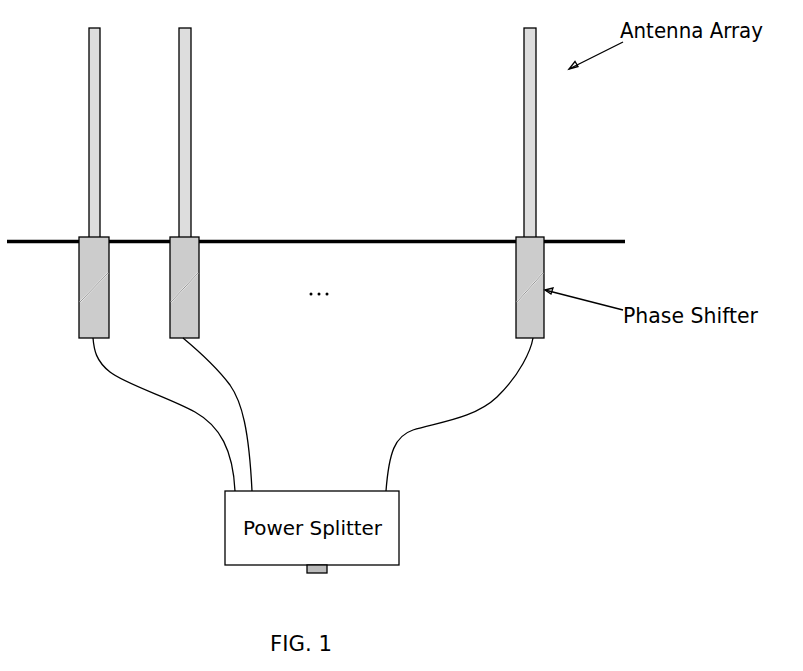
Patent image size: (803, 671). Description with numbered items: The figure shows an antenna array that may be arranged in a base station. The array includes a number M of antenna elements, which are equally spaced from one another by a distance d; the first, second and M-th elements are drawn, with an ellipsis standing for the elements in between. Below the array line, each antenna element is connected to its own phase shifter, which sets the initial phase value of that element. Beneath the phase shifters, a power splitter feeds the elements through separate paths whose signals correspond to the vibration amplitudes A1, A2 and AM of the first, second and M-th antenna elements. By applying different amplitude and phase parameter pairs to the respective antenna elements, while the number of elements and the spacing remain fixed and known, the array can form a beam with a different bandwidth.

The vibration amplitude A1 is at (164, 414).
The vibration amplitude A2 is at (217, 414).
The vibration amplitude AM is at (459, 414).